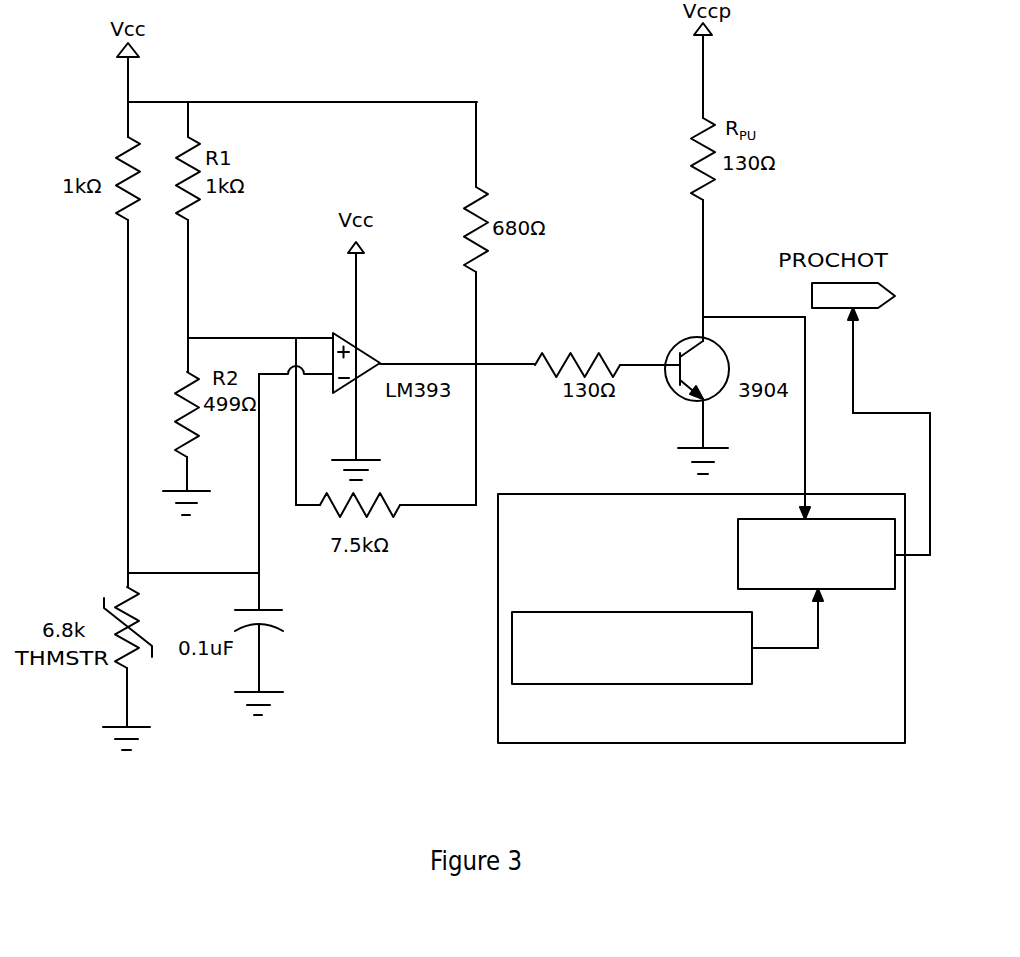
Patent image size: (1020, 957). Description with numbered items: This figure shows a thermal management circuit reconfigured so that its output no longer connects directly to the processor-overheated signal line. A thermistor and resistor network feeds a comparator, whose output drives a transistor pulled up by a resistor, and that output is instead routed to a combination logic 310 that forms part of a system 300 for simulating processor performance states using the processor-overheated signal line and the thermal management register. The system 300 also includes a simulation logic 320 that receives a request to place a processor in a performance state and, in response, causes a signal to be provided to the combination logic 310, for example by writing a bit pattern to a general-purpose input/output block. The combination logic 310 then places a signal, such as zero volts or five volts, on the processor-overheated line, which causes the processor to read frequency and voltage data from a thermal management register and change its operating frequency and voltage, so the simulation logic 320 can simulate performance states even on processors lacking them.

The system 300 is at (702, 743).
The combination logic 310 is at (738, 556).
The simulation logic 320 is at (630, 684).